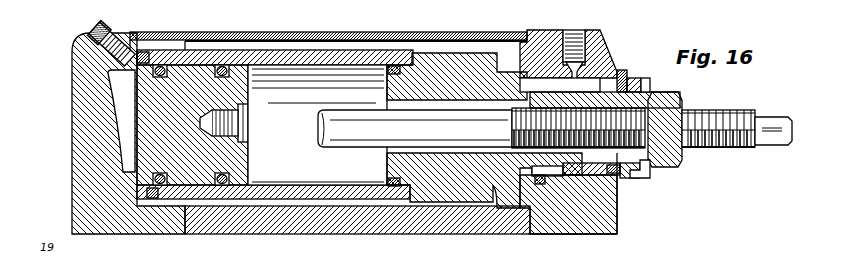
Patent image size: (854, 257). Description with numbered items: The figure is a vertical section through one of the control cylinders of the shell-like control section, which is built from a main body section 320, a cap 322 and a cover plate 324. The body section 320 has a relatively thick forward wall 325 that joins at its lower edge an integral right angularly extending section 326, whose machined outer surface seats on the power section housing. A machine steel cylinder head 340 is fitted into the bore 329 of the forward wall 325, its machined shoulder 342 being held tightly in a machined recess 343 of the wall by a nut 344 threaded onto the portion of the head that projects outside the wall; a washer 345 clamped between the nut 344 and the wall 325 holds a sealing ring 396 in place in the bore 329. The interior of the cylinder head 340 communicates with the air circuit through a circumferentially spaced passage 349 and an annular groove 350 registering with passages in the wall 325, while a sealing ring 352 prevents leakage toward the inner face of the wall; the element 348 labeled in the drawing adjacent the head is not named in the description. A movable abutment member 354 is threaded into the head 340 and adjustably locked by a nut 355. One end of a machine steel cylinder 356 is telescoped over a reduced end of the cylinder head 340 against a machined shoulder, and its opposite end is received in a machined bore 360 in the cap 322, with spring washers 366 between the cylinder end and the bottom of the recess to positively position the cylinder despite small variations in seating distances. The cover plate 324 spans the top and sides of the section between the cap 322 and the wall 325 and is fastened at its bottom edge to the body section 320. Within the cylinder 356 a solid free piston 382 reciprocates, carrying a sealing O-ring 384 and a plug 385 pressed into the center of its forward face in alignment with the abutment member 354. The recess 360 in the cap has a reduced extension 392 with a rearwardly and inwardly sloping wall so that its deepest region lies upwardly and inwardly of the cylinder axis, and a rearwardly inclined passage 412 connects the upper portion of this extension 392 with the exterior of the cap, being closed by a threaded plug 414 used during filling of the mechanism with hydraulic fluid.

The main body section 320 is at (630, 223).
The cap 322 is at (71, 142).
The cover plate 324 is at (308, 32).
The forward wall 325 is at (608, 55).
The right angularly extending section 326 is at (338, 228).
The bore 329 is at (573, 208).
The cylinder head 340 is at (421, 53).
The machined shoulder 342 is at (540, 23).
The machined recess 343 is at (568, 204).
The nut 344 is at (634, 177).
The washer 345 is at (622, 186).
The piston rod 348 is at (376, 153).
The passage 349 is at (600, 87).
The annular groove 350 is at (591, 178).
The sealing ring 352 is at (563, 52).
The movable abutment member 354 is at (741, 110).
The nut 355 is at (682, 103).
The cylinder 356 is at (278, 70).
The machined bore 360 is at (168, 199).
The spring washers 366 is at (188, 51).
The free piston 382 is at (214, 125).
The sealing O-ring 384 is at (222, 64).
The plug 385 is at (250, 121).
The reduced extension 392 is at (104, 115).
The sealing ring 396 is at (620, 70).
The rearwardly inclined passage 412 is at (141, 52).
The threaded plug 414 is at (98, 31).